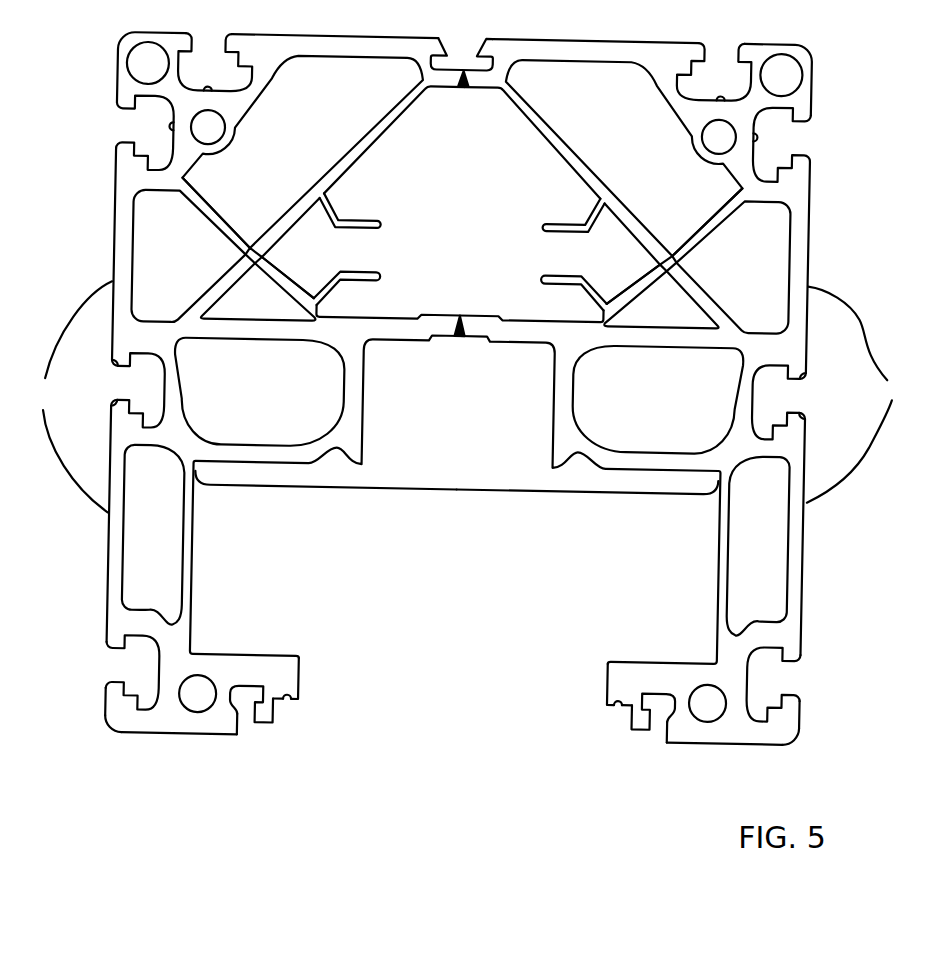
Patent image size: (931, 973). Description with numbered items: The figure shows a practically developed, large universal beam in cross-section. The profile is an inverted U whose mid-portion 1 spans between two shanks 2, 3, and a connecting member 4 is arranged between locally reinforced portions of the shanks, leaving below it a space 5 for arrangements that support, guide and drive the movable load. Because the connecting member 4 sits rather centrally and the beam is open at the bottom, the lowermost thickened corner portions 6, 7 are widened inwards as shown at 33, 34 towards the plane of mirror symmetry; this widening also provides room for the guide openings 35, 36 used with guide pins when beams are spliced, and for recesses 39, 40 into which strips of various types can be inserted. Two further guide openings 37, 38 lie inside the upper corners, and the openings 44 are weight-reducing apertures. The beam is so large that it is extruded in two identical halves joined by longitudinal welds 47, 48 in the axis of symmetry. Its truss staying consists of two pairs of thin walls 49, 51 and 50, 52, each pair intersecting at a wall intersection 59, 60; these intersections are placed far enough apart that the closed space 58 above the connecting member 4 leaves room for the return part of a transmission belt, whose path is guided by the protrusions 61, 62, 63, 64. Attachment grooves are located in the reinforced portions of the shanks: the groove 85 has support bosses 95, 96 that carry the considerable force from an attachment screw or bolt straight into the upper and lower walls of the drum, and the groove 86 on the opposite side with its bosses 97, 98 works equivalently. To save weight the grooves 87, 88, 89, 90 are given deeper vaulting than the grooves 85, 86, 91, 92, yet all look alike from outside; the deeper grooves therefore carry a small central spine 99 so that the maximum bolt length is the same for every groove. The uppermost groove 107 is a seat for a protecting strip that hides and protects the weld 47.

The mid-portion 1 is at (576, 38).
The shank 2 is at (70, 396).
The shank 3 is at (855, 396).
The connecting member 4 is at (474, 493).
The space 5 is at (456, 498).
The thickened corner portion 6 is at (124, 738).
The thickened corner portion 7 is at (788, 738).
The widened portion 33 is at (268, 659).
The widened portion 34 is at (636, 659).
The guide opening 35 is at (198, 694).
The guide opening 36 is at (708, 703).
The guide opening 37 is at (208, 127).
The guide opening 38 is at (719, 137).
The recess 39 is at (453, 708).
The recess 40 is at (298, 705).
The weight-reducing aperture 44 is at (465, 69).
The weld 47 is at (456, 92).
The weld 48 is at (457, 340).
The thin wall 49 is at (287, 216).
The thin wall 50 is at (628, 208).
The thin wall 51 is at (230, 231).
The thin wall 52 is at (695, 258).
The closed space 58 is at (462, 203).
The wall intersection 59 is at (260, 261).
The wall intersection 60 is at (657, 259).
The protrusion 61 is at (351, 221).
The protrusion 62 is at (568, 221).
The protrusion 63 is at (351, 273).
The protrusion 64 is at (571, 273).
The attachment groove 85 is at (138, 390).
The attachment groove 86 is at (779, 402).
The groove 87 is at (145, 132).
The groove 88 is at (782, 144).
The groove 89 is at (215, 62).
The groove 90 is at (714, 72).
The groove 91 is at (132, 672).
The groove 92 is at (773, 684).
The support boss 95 is at (116, 373).
The support boss 96 is at (116, 405).
The support boss 97 is at (802, 372).
The support boss 98 is at (803, 407).
The central spine 99 is at (750, 136).
The groove 107 is at (462, 52).